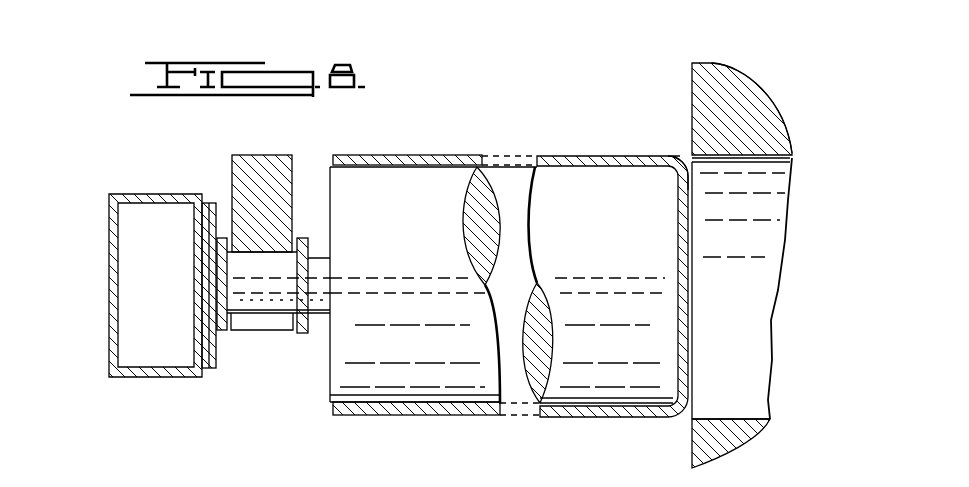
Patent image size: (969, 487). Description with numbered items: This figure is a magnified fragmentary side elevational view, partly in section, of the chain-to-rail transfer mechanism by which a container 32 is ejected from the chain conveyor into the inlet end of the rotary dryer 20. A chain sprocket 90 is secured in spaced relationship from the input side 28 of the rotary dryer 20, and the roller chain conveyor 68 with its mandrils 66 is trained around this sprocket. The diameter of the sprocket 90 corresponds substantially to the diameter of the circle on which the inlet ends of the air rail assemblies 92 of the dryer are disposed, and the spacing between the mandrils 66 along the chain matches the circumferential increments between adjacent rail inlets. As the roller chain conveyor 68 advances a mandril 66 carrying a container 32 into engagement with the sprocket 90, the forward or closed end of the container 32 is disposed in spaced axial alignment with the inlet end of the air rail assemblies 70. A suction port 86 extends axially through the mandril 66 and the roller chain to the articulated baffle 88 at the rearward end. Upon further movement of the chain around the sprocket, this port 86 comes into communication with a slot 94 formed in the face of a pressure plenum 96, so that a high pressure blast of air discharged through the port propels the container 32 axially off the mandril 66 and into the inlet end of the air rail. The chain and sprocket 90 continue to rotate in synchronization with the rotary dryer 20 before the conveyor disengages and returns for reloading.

The rotary dryer 20 is at (759, 87).
The input side 28 is at (692, 72).
The container 32 is at (573, 155).
The mandril 66 is at (383, 392).
The roller chain conveyor 68 is at (297, 333).
The air rail assemblies 70 is at (690, 155).
The suction port 86 is at (555, 282).
The articulated baffles 88 is at (217, 203).
The chain sprocket 90 is at (240, 166).
The air rail assemblies 92 is at (735, 248).
The slot 94 is at (216, 278).
The pressure plenum 96 is at (109, 251).